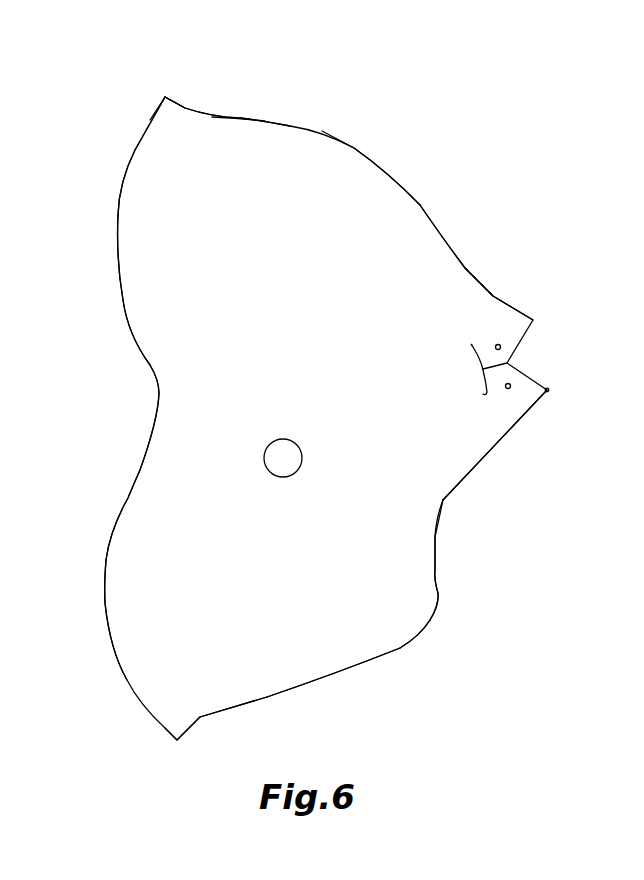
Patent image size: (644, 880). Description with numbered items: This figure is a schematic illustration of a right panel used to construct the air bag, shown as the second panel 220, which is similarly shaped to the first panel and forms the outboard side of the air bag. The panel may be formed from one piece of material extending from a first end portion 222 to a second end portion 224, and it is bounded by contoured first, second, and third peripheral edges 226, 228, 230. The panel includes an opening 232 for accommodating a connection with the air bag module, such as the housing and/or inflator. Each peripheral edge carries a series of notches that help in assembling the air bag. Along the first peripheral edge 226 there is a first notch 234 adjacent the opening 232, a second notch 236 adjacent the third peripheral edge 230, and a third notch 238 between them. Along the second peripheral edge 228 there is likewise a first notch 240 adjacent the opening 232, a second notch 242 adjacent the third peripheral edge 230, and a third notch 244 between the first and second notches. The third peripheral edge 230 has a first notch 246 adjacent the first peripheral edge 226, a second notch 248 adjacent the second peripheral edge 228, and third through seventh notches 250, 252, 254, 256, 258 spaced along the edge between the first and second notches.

The second panel 220 is at (428, 152).
The first end portion 222 is at (293, 105).
The second end portion 224 is at (353, 695).
The first peripheral edge 226 is at (354, 148).
The second peripheral edge 228 is at (430, 620).
The third peripheral edge 230 is at (122, 298).
The opening 232 is at (530, 360).
The first notch 234 is at (493, 296).
The second notch 236 is at (240, 118).
The third notch 238 is at (465, 268).
The first notch 240 is at (507, 432).
The second notch 242 is at (267, 697).
The third notch 244 is at (435, 570).
The first notch 246 is at (162, 102).
The second notch 248 is at (172, 737).
The third notch 250 is at (135, 150).
The fourth notch 252 is at (118, 210).
The fifth notch 254 is at (159, 393).
The sixth notch 256 is at (128, 498).
The seventh notch 258 is at (105, 603).